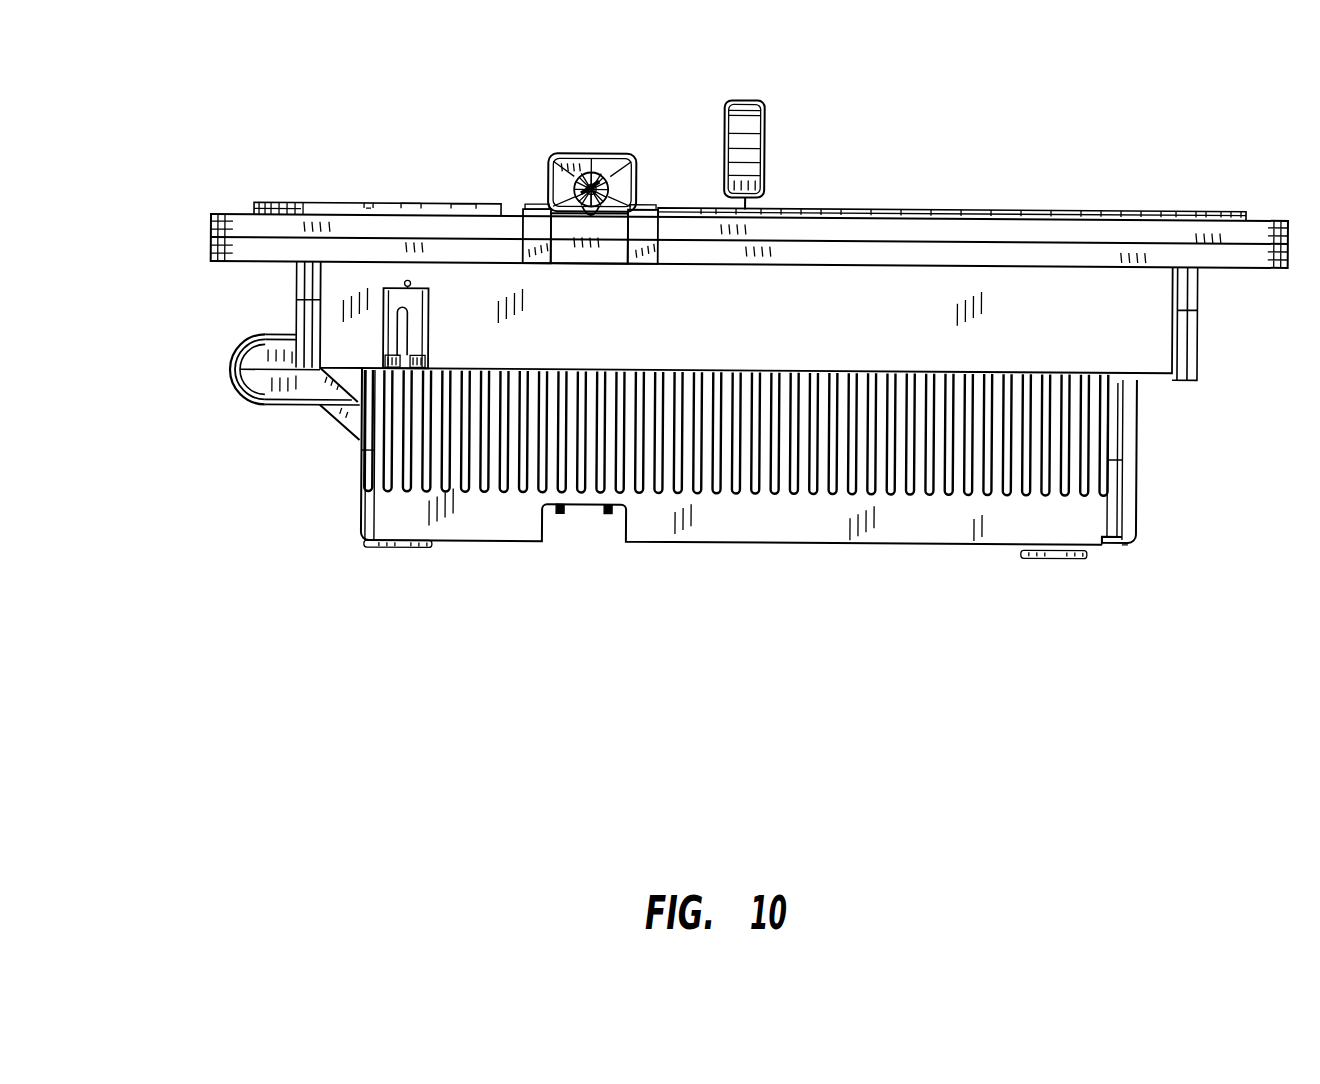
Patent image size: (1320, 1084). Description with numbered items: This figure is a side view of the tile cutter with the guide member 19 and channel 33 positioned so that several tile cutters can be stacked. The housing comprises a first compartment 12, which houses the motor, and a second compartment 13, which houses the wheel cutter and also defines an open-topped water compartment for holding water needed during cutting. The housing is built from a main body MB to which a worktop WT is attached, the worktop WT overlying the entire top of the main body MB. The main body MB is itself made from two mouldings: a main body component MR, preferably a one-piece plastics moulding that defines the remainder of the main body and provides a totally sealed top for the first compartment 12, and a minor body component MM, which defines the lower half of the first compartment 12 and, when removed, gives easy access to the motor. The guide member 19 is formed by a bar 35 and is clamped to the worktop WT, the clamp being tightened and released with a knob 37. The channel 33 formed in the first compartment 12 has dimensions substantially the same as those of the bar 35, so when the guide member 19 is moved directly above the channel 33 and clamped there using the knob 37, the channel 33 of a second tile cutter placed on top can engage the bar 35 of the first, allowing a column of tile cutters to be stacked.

The first compartment 12 is at (480, 517).
The second compartment 13 is at (913, 528).
The guide member 19 is at (536, 215).
The channel 33 is at (583, 512).
The bar 35 is at (637, 174).
The knob 37 is at (617, 198).
The worktop WT is at (212, 236).
The main body component MR is at (943, 273).
The main body MB is at (334, 462).
The minor body component MM is at (1072, 527).